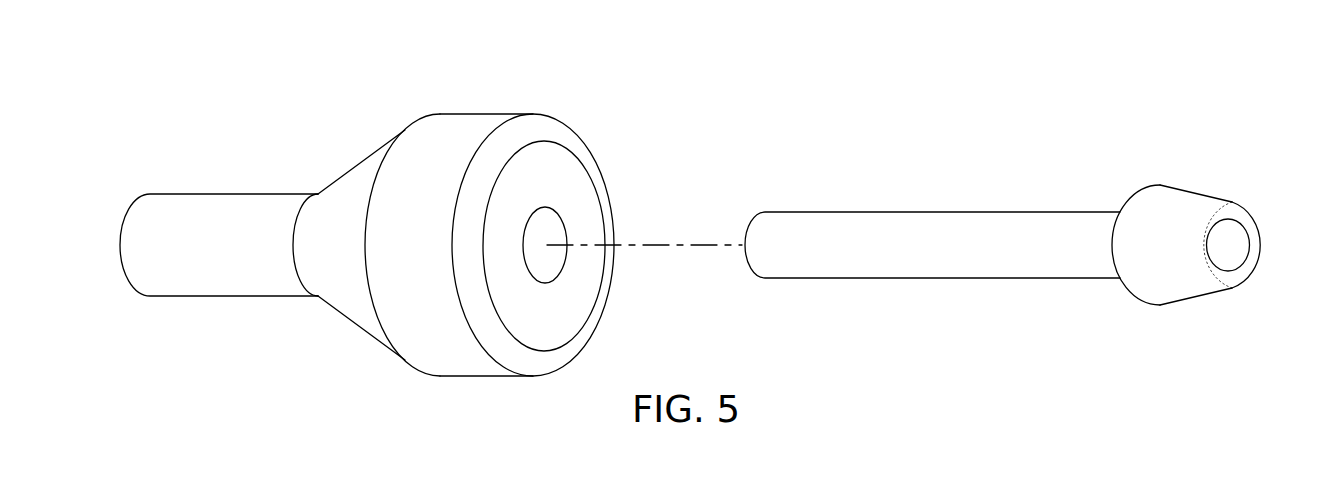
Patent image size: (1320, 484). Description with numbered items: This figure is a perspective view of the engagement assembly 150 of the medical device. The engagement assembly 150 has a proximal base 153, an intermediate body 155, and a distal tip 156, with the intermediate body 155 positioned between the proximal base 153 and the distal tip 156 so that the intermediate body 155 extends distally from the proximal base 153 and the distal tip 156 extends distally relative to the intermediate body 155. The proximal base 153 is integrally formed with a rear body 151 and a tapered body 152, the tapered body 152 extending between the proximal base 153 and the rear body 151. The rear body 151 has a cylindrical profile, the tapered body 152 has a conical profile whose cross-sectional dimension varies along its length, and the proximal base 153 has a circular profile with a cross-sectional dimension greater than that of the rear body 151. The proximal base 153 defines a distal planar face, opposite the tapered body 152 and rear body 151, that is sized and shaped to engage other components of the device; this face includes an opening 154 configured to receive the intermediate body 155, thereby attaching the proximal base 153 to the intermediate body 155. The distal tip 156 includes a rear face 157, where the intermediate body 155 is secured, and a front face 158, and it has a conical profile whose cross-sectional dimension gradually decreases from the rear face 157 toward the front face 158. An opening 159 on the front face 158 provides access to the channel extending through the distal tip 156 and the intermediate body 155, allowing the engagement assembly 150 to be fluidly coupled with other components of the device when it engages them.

The engagement assembly 150 is at (188, 75).
The rear body 151 is at (207, 210).
The tapered body 152 is at (352, 190).
The proximal base 153 is at (462, 122).
The opening 154 is at (565, 262).
The intermediate body 155 is at (938, 226).
The distal tip 156 is at (1167, 200).
The rear face 157 is at (1130, 194).
The front face 158 is at (1235, 213).
The opening 159 is at (1233, 266).